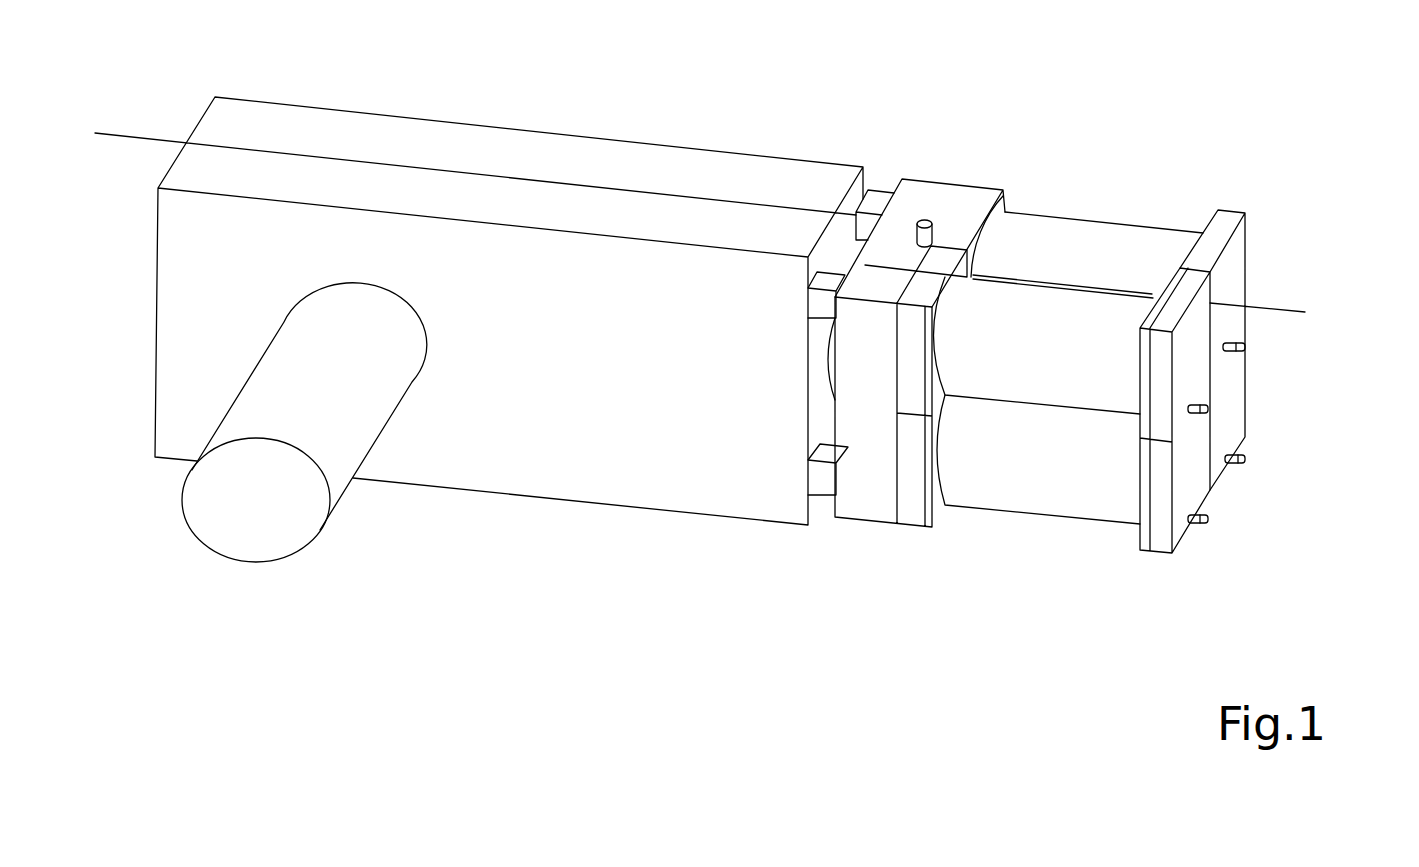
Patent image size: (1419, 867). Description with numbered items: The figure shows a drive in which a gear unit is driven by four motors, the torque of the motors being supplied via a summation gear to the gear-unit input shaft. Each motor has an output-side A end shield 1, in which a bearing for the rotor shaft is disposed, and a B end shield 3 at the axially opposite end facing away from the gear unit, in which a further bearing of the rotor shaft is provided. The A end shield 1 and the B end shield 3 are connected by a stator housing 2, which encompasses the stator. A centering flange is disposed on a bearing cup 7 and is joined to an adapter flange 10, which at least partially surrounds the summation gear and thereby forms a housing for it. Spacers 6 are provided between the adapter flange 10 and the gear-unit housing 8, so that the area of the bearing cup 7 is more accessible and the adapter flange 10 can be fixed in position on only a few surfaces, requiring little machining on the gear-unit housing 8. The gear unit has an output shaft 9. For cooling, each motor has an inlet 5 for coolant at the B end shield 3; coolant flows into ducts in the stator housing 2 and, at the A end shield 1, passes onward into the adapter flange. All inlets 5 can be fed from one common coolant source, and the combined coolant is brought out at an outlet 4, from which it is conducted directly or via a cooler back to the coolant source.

The A end shield 1 is at (975, 204).
The stator housing 2 is at (1082, 251).
The B end shield 3 is at (1223, 228).
The outlet for coolant 4 is at (924, 222).
The inlet for coolant 5 is at (1246, 346).
The spacer 6 is at (827, 283).
The bearing cup 7 is at (830, 372).
The gear-unit housing 8 is at (640, 415).
The output shaft 9 is at (245, 515).
The adapter flange 10 is at (916, 203).